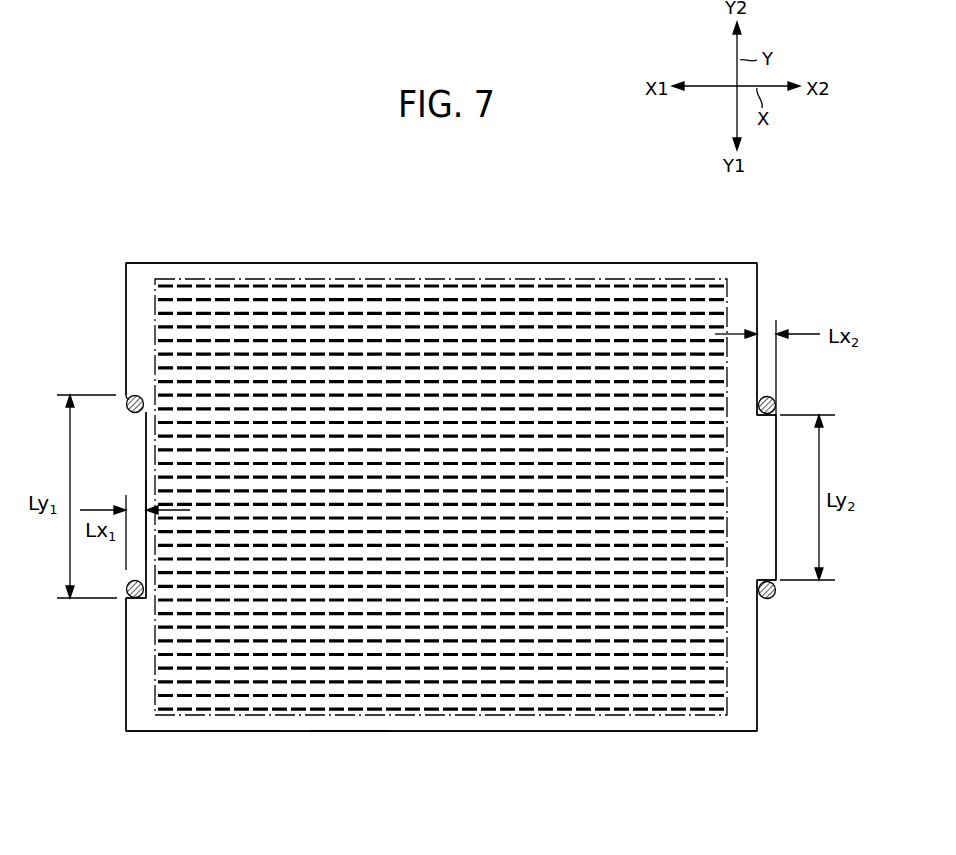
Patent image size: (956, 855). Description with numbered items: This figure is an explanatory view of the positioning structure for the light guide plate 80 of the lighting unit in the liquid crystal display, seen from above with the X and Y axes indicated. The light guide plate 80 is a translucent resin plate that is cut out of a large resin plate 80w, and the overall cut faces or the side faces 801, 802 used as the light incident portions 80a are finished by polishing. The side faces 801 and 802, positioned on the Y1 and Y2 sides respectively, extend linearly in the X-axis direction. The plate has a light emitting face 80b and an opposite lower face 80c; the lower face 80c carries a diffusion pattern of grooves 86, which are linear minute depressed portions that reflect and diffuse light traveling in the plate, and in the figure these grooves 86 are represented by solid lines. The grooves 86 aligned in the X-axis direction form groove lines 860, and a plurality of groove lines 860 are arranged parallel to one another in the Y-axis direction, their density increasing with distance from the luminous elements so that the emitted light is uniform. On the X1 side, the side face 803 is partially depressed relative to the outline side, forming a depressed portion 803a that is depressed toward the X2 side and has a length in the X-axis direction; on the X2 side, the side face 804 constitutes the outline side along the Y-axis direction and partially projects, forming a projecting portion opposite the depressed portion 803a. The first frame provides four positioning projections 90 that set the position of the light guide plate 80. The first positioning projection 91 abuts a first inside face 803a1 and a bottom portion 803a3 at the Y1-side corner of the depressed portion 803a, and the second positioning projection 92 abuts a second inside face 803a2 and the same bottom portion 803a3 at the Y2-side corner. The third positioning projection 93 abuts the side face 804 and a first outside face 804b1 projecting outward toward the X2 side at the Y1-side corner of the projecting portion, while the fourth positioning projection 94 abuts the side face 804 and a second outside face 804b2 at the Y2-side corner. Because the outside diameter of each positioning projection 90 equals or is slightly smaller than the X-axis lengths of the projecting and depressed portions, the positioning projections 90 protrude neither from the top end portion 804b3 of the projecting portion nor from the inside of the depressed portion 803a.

The light guide plate 80 is at (451, 455).
The resin plate 80w is at (556, 250).
The light incident portion 80a is at (441, 500).
The side face 801 is at (590, 732).
The side face 802 is at (316, 262).
The light emitting face 80b is at (348, 732).
The lower face 80c is at (240, 732).
The groove 86 is at (441, 538).
The groove line 860 is at (490, 712).
The side face 803 is at (126, 336).
The depressed portion 803a is at (146, 447).
The first inside face 803a1 is at (131, 594).
The second inside face 803a2 is at (144, 396).
The bottom portion 803a3 is at (140, 518).
The side face 804 is at (758, 680).
The first outside face 804b1 is at (770, 599).
The second outside face 804b2 is at (771, 396).
The top end portion 804b3 is at (778, 510).
The positioning projection 90 is at (454, 491).
The first positioning projection 91 is at (128, 595).
The second positioning projection 92 is at (128, 397).
The third positioning projection 93 is at (776, 590).
The fourth positioning projection 94 is at (776, 405).